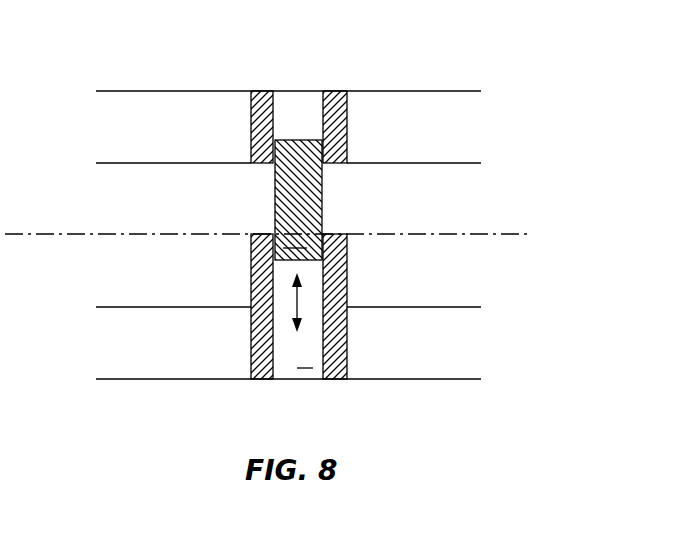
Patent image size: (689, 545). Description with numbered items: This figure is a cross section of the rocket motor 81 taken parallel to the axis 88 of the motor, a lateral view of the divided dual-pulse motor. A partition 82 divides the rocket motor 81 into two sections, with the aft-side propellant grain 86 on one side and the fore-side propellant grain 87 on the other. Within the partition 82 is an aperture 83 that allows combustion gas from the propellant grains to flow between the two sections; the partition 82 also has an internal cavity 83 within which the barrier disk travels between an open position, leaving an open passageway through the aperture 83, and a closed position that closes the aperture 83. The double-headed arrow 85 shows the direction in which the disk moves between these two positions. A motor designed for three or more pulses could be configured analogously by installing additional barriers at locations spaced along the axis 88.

The rocket motor 81 is at (415, 92).
The partition 82 is at (348, 80).
The aperture 83 is at (360, 199).
The arrow 85 is at (295, 300).
The aft-side propellant grain 86 is at (140, 105).
The fore-side propellant grain 87 is at (435, 122).
The axis 88 is at (490, 234).